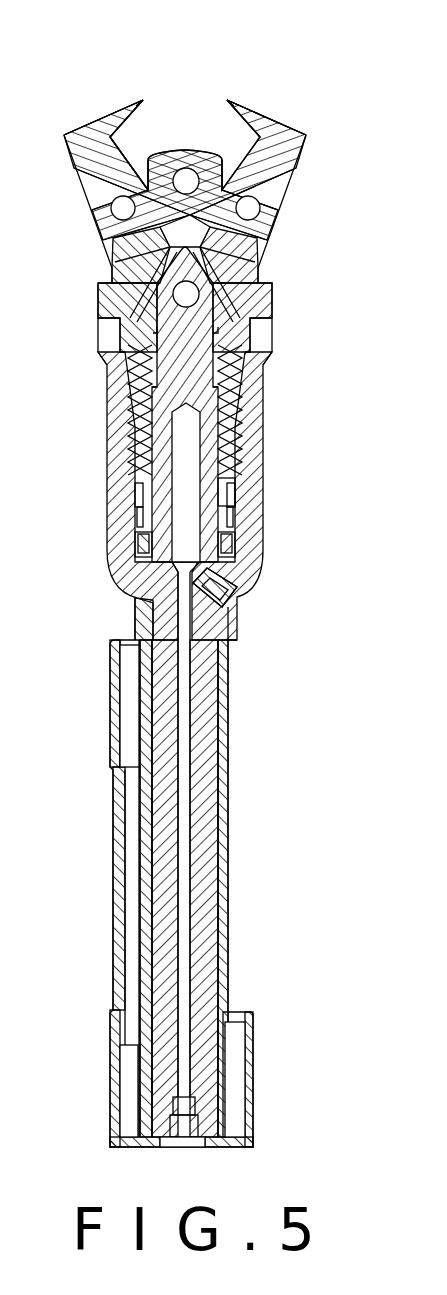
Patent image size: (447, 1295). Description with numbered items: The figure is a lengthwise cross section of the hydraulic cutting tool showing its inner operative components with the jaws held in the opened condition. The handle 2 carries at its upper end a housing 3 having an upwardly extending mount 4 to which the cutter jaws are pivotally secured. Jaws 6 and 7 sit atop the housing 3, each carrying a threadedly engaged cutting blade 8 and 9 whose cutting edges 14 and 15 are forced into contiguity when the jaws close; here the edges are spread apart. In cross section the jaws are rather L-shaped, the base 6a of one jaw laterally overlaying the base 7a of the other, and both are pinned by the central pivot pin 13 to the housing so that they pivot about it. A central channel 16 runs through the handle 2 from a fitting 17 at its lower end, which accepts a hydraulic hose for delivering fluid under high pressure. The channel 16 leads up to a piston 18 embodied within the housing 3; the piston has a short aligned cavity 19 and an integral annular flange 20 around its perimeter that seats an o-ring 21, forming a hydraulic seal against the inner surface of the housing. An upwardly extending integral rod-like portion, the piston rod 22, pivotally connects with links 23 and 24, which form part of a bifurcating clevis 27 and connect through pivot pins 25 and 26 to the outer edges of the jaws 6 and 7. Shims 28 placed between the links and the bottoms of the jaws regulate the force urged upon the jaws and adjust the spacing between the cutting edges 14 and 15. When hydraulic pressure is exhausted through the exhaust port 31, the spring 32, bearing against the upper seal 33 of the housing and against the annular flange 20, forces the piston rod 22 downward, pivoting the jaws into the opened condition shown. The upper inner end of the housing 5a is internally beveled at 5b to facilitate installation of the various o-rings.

The handle 2 is at (228, 803).
The housing 3 is at (130, 634).
The mount 4 is at (113, 683).
The upper inner end of the housing 5a is at (107, 396).
The internal bevel 5b is at (263, 368).
The jaw 6 is at (98, 158).
The base of jaw 6a is at (137, 155).
The jaw 7 is at (293, 155).
The base of jaw 7a is at (300, 188).
The cutting blade 8 is at (256, 118).
The cutting blade 9 is at (101, 115).
The pivot pin 13 is at (187, 168).
The cutting edge 14 is at (143, 100).
The cutting edge 15 is at (227, 100).
The central channel 16 is at (183, 920).
The fitting 17 is at (178, 1125).
The piston 18 is at (135, 490).
The cavity 19 is at (190, 458).
The annular flange 20 is at (233, 500).
The o-ring 21 is at (135, 528).
The piston rod 22 is at (126, 356).
The link 23 is at (132, 268).
The link 24 is at (245, 270).
The pivot pin 25 is at (123, 208).
The pivot pin 26 is at (250, 208).
The clevis 27 is at (112, 228).
The shims 28 is at (110, 253).
The exhaust port 31 is at (237, 612).
The spring 32 is at (135, 432).
The upper seal 33 is at (98, 312).